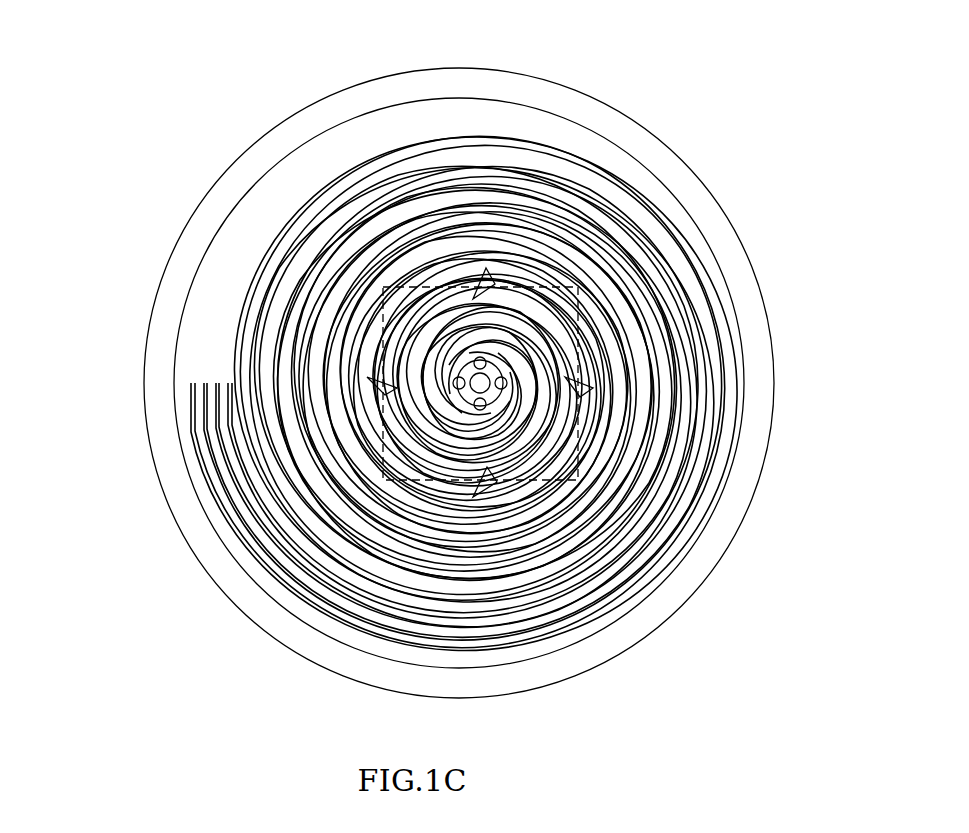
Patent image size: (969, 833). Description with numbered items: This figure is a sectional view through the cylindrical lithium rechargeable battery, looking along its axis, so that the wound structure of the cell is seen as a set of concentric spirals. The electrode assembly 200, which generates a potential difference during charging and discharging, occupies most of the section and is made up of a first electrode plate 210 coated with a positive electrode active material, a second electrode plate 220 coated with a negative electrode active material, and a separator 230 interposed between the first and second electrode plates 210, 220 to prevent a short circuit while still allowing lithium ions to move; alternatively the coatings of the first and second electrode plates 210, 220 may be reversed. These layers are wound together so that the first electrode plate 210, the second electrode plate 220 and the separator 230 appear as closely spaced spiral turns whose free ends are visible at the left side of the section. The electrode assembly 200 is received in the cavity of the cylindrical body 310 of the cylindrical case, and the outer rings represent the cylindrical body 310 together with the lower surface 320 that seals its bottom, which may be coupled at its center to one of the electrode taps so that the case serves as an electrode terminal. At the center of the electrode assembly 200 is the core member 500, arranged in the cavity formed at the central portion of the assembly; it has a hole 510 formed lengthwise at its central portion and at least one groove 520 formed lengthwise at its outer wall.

The electrode assembly 200 is at (54, 512).
The first electrode plate 210 is at (250, 524).
The second electrode plate 220 is at (225, 515).
The separator 230 is at (200, 496).
The cylindrical body 310 is at (713, 252).
The lower surface 320 is at (765, 292).
The core member 500 is at (384, 286).
The hole 510 is at (487, 360).
The groove 520 is at (477, 358).